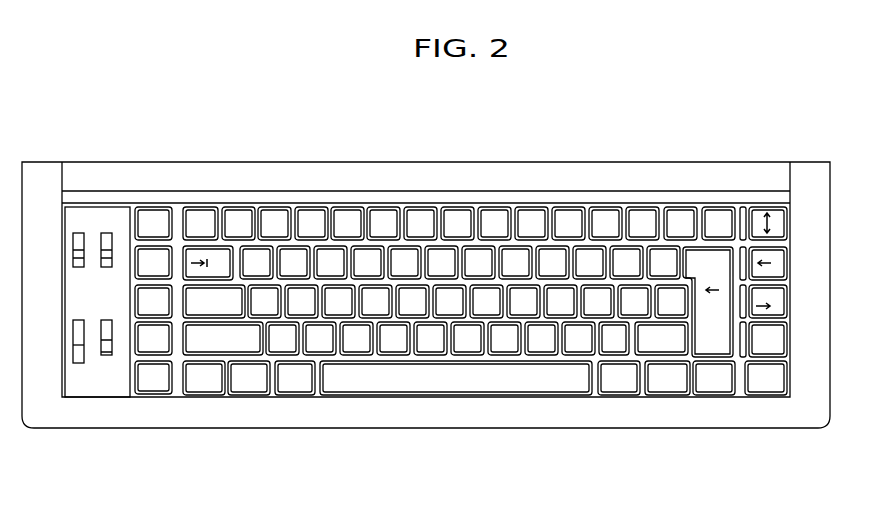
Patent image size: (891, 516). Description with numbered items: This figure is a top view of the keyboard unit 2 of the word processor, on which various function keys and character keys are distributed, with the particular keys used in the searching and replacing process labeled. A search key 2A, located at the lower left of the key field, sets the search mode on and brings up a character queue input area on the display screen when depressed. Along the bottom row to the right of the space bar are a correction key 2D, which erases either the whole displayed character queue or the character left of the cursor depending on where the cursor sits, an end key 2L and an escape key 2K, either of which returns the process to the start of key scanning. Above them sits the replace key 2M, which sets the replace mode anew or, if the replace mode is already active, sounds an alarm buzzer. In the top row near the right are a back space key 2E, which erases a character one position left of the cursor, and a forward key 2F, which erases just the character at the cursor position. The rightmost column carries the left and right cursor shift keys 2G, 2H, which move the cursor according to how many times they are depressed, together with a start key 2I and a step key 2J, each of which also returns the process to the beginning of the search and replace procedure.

The keyboard unit 2 is at (433, 158).
The search key 2A is at (208, 386).
The correction key 2D is at (620, 386).
The back space key 2E is at (684, 220).
The forward key 2F is at (722, 222).
The cursor shift key 2G is at (776, 269).
The cursor shift key 2H is at (776, 300).
The start key 2I is at (777, 342).
The step key 2J is at (778, 380).
The escape key 2K is at (718, 386).
The end key 2L is at (672, 386).
The replace key 2M is at (662, 342).